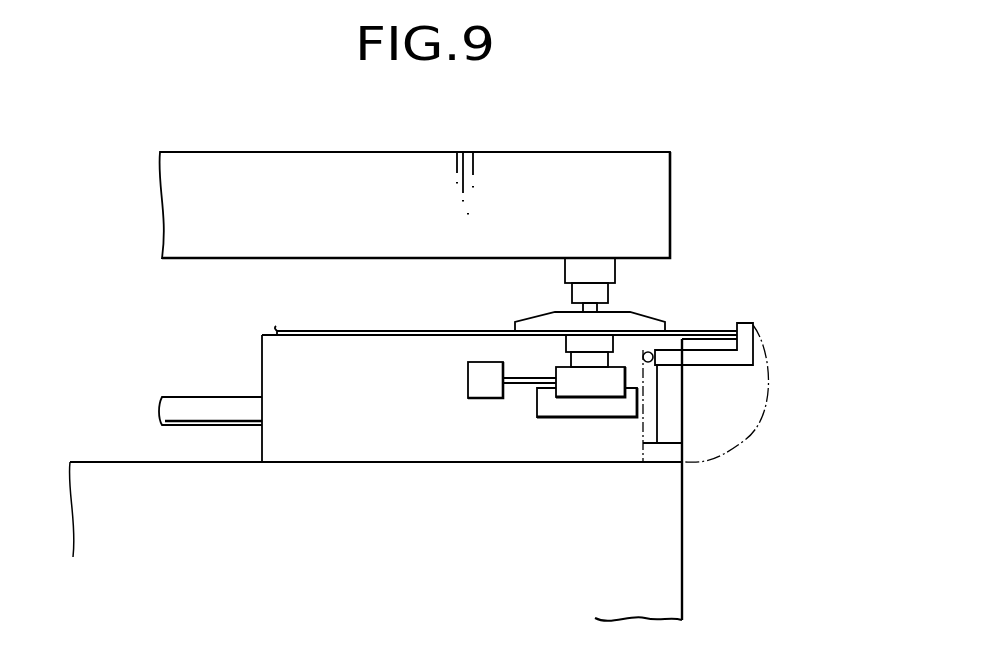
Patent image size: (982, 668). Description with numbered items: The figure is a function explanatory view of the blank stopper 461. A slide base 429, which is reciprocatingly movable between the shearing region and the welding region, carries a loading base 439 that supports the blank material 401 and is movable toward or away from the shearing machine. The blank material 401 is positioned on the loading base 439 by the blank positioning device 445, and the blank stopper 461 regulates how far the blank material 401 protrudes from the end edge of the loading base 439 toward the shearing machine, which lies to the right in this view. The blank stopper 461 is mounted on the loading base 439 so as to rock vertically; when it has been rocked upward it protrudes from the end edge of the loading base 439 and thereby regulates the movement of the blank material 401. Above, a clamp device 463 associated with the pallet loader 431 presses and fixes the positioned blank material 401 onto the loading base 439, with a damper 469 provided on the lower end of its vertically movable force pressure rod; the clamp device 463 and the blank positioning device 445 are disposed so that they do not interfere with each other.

The pallet loader 431 is at (264, 172).
The clamp device 463 is at (688, 257).
The damper 469 is at (647, 313).
The blank material 401 is at (332, 327).
The blank stopper 461 is at (757, 343).
The loading base 439 is at (332, 453).
The blank positioning device 445 is at (528, 427).
The slide base 429 is at (684, 584).